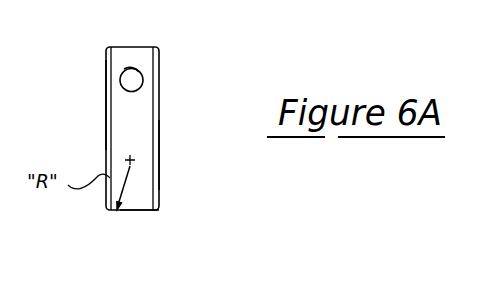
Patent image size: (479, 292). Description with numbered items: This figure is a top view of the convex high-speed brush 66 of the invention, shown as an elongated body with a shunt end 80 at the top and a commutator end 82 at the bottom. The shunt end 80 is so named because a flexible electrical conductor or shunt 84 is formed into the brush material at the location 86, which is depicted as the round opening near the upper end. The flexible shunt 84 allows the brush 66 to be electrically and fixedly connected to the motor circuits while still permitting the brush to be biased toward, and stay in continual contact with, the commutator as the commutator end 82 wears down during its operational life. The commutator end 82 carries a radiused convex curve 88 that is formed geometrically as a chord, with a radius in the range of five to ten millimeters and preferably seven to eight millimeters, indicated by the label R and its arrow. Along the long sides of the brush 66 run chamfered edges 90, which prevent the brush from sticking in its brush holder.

The shunt end 80 is at (147, 47).
The commutator end 82 is at (158, 208).
The shunt 84 is at (141, 71).
The shunt forming location 86 is at (124, 69).
The convex curve 88 is at (145, 211).
The high-speed brush 66 is at (158, 155).
The chamfered edges 90 is at (106, 107).